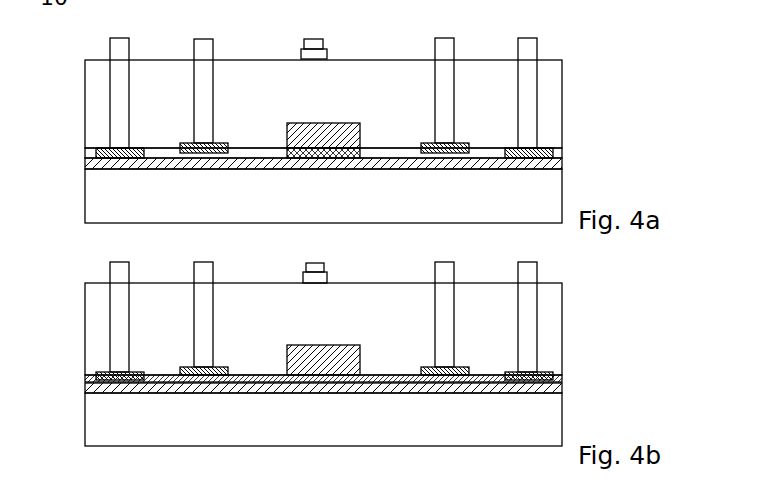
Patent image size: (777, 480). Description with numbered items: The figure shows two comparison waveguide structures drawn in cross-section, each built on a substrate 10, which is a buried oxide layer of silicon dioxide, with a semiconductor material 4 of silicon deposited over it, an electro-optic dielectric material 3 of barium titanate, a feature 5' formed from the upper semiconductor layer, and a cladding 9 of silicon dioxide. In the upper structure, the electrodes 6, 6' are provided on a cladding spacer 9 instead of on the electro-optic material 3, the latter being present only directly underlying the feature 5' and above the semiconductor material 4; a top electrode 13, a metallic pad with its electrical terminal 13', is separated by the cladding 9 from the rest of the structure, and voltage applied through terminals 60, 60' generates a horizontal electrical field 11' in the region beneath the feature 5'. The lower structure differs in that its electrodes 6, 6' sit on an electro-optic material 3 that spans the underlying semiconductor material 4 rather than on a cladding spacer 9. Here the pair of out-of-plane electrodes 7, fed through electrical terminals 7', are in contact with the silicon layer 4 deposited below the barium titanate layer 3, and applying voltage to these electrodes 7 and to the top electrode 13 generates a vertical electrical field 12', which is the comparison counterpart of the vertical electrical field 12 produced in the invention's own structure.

In FIG. 4A, the electro-optic dielectric material 3 is at (362, 147).
In FIG. 4B, the electro-optic dielectric material 3 is at (85, 378).
In FIG. 4A, the semiconductor material 4 is at (560, 161).
In FIG. 4B, the semiconductor material 4 is at (562, 382).
In FIG. 4A, the feature 5' is at (323, 109).
In FIG. 4B, the feature 5' is at (344, 338).
In FIG. 4A, the electrode 6 is at (195, 121).
In FIG. 4B, the electrode 6 is at (195, 345).
In FIG. 4A, the electrode 6' is at (457, 131).
In FIG. 4B, the electrode 6' is at (457, 354).
In FIG. 4A, the out-of-plane electrode 7 is at (321, 126).
In FIG. 4B, the out-of-plane electrode 7 is at (323, 341).
In FIG. 4A, the electrical terminal 7' is at (335, 76).
In FIG. 4B, the electrical terminal 7' is at (335, 304).
In FIG. 4A, the cladding 9 is at (92, 83).
In FIG. 4B, the cladding 9 is at (553, 312).
In FIG. 4A, the substrate 10 is at (93, 203).
In FIG. 4B, the substrate 10 is at (93, 425).
In FIG. 4A, the horizontal electrical field 11' is at (318, 199).
In FIG. 4A, the vertical electrical field 12 is at (311, 9).
In FIG. 4B, the vertical electrical field 12' is at (288, 425).
In FIG. 4A, the top electrode 13 is at (344, 47).
In FIG. 4B, the top electrode 13 is at (345, 270).
In FIG. 4A, the electrical terminal 13' is at (337, 31).
In FIG. 4B, the electrical terminal 13' is at (338, 255).
In FIG. 4A, the electrical terminal 60 is at (209, 76).
In FIG. 4B, the electrical terminal 60 is at (209, 301).
In FIG. 4A, the electrical terminal 60' is at (454, 76).
In FIG. 4B, the electrical terminal 60' is at (454, 303).